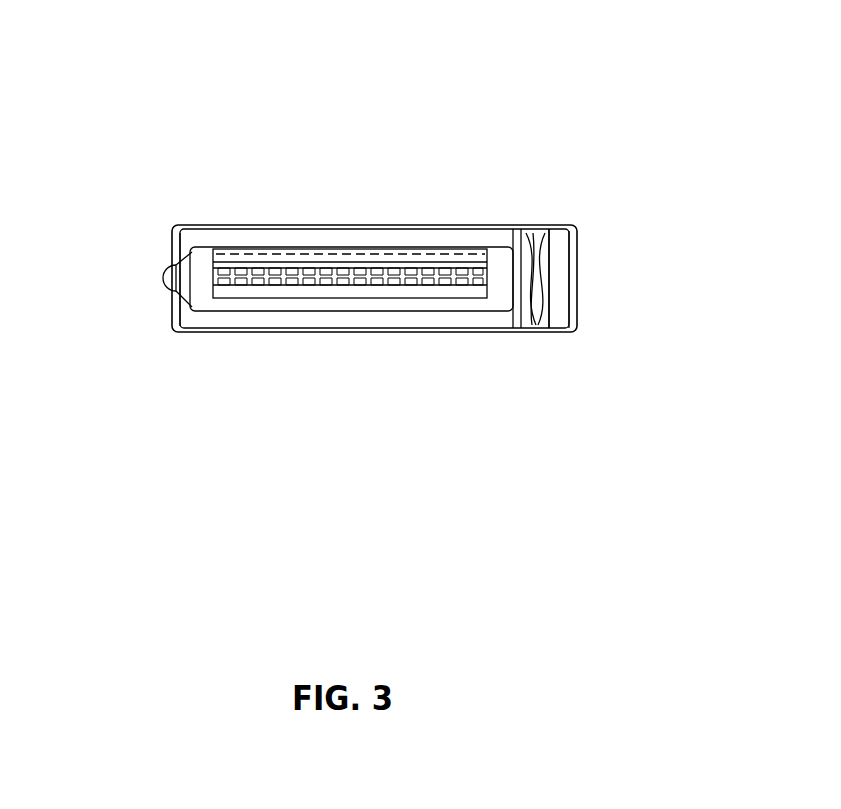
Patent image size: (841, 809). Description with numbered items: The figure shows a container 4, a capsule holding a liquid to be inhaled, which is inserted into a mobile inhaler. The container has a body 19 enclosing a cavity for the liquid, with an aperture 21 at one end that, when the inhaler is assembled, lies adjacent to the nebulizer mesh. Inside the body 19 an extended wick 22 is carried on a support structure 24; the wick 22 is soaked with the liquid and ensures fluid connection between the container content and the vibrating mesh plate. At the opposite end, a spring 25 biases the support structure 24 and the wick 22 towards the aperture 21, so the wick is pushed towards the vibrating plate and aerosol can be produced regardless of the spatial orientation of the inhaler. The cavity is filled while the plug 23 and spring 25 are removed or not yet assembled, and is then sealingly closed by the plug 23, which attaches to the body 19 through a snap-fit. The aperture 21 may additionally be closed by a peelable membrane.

The container 4 is at (318, 178).
The body 19 is at (422, 224).
The aperture 21 is at (167, 310).
The wick 22 is at (190, 238).
The plug 23 is at (576, 227).
The support structure 24 is at (382, 282).
The spring 25 is at (540, 333).